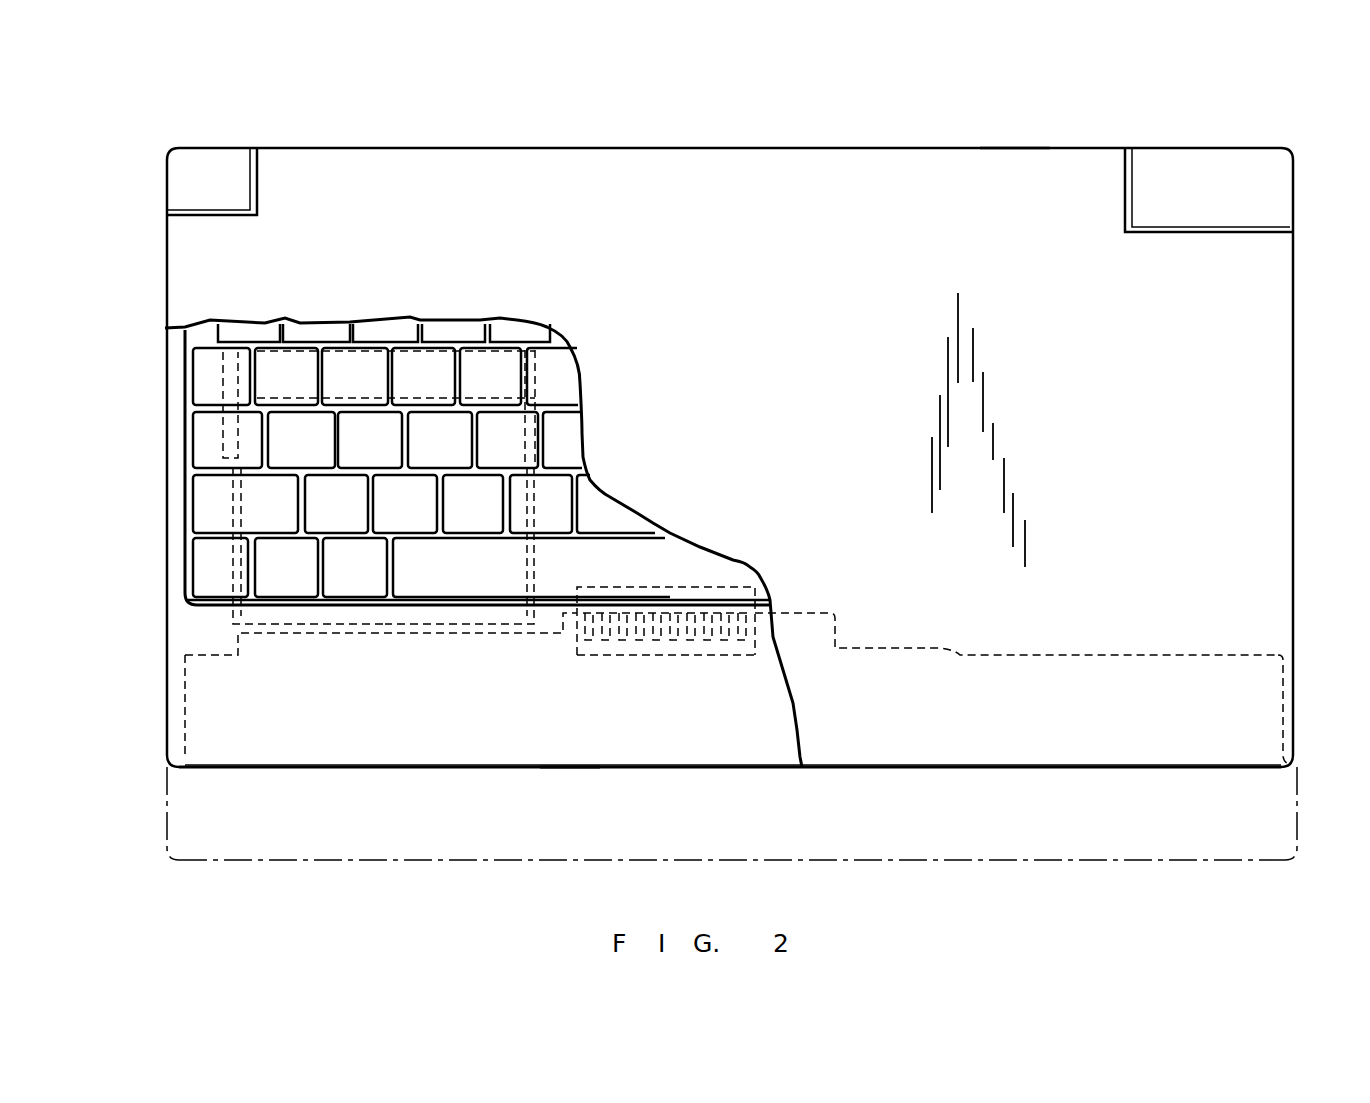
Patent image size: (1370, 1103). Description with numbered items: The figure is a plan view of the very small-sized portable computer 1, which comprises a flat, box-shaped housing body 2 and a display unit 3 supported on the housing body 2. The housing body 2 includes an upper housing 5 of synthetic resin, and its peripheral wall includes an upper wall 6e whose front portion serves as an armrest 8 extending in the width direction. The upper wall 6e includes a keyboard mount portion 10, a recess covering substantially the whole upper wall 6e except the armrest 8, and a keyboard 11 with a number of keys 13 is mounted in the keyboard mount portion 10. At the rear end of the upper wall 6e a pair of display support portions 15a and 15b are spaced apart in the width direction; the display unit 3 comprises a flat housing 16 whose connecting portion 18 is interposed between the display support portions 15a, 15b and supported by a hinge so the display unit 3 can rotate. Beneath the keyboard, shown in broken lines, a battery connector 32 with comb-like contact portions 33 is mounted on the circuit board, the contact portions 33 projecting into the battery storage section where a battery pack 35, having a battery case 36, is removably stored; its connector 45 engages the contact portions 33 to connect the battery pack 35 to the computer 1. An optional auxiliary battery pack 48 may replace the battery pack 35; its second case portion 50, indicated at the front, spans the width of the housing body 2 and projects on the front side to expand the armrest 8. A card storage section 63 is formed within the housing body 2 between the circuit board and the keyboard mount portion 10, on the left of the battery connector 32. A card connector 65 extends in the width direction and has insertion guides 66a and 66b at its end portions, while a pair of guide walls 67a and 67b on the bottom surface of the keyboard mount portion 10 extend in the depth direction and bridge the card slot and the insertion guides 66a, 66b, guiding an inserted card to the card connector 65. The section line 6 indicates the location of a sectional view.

The portable computer 1 is at (748, 145).
The housing body 2 is at (162, 638).
The display unit 3 is at (1293, 378).
The upper housing 5 is at (405, 753).
The section line 6 is at (743, 533).
The upper wall 6e is at (197, 715).
The armrest 8 is at (562, 745).
The keyboard mount portion 10 is at (185, 383).
The keyboard 11 is at (299, 376).
The keys 13 is at (452, 437).
The display support portion 15a is at (221, 158).
The display support portion 15b is at (1203, 162).
The housing 16 is at (1267, 617).
The connecting portion 18 is at (1012, 167).
The battery connector 32 is at (738, 584).
The contact portions 33 is at (650, 647).
The battery pack 35 is at (950, 668).
The battery case 36 is at (1272, 720).
The connector 45 is at (730, 655).
The auxiliary battery pack 48 is at (900, 852).
The second case portion 50 is at (197, 828).
The card storage section 63 is at (364, 588).
The card connector 65 is at (433, 368).
The insertion guide 66a is at (222, 436).
The insertion guide 66b is at (537, 438).
The guide wall 67a is at (230, 562).
The guide wall 67b is at (533, 552).